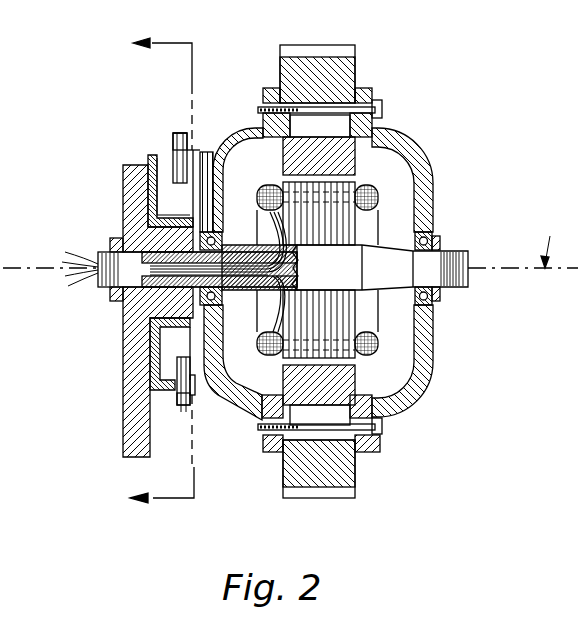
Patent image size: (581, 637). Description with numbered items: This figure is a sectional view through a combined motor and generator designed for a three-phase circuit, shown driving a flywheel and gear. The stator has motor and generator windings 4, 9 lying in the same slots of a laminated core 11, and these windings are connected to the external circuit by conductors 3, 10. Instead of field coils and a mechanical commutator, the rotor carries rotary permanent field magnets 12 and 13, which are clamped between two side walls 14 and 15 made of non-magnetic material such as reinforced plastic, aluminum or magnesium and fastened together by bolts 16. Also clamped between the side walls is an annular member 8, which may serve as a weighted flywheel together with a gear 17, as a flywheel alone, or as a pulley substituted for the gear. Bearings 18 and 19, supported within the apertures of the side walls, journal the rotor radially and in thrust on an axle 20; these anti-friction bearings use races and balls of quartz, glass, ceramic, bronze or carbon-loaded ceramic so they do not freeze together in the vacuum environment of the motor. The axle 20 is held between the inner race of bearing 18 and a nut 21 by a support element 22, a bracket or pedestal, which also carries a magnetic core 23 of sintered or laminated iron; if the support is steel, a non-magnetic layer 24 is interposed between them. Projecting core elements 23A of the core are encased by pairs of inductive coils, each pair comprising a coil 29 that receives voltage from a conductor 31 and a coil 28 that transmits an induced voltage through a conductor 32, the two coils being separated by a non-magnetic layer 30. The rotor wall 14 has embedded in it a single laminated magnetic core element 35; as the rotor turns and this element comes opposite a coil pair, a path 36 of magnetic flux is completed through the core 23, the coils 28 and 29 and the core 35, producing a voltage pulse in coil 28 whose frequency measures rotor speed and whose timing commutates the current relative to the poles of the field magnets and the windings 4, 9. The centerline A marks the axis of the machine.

The conductor 3 is at (38, 295).
The annular member 8 is at (348, 70).
The conductor 10 is at (68, 255).
The laminated core 11 is at (348, 223).
The permanent magnet 12 is at (340, 162).
The permanent magnet 13 is at (347, 382).
The side wall 14 is at (255, 408).
The side wall 15 is at (435, 382).
The bolt 16 is at (368, 448).
The gear 17 is at (313, 488).
The bearing 18 is at (220, 237).
The bearing 19 is at (440, 302).
The axle 20 is at (380, 267).
The nut 21 is at (108, 240).
The support element 22 is at (135, 320).
The magnetic core 23 is at (152, 385).
The projecting core element 23A is at (193, 384).
The non-magnetic layer 24 is at (148, 160).
The coil 28 is at (180, 171).
The coil 29 is at (173, 147).
The layer 30 is at (183, 357).
The conductor 31 is at (177, 133).
The conductor 32 is at (195, 133).
The magnetic core element 35 is at (210, 178).
The path of magnetic flux 36 is at (160, 146).
The motor winding 4 is at (380, 193).
The generator winding 9 is at (366, 270).
The axis A is at (548, 241).